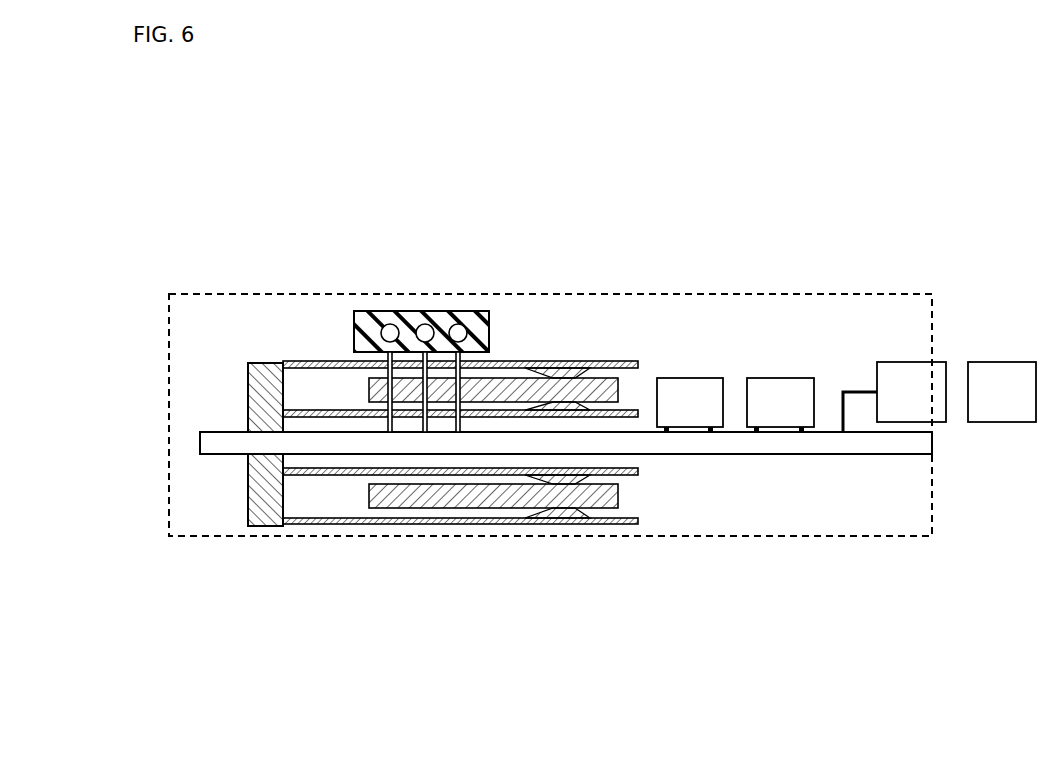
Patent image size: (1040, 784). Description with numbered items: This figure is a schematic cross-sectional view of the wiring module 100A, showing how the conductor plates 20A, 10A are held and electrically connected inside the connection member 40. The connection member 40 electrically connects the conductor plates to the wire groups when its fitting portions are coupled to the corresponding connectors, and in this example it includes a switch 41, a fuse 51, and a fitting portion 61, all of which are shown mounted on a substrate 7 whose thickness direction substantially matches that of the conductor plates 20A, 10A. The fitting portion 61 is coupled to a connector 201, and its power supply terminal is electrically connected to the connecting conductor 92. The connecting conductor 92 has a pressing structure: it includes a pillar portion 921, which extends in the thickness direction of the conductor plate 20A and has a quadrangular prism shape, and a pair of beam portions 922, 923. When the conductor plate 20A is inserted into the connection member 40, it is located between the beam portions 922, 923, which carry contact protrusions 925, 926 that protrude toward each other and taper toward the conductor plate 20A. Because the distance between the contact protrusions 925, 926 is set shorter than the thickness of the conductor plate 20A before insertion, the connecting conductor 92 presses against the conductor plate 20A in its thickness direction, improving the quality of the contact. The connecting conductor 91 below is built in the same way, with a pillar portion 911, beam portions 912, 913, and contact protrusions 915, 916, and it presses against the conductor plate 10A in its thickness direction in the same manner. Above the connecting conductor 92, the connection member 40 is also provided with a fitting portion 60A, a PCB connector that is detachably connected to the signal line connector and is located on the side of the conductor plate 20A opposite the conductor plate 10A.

The wiring module 100A is at (834, 251).
The connection member 40 is at (882, 294).
The substrate 7 is at (828, 437).
The conductor plate 20A is at (445, 340).
The connecting conductor 92 is at (411, 340).
The pillar portion 921 is at (262, 398).
The beam portion 922 is at (296, 361).
The beam portion 923 is at (302, 412).
The contact protrusion 925 is at (563, 368).
The contact protrusion 926 is at (590, 372).
The fitting portion 60A is at (428, 311).
The conductor plate 10A is at (451, 543).
The connecting conductor 91 is at (411, 529).
The pillar portion 911 is at (262, 498).
The beam portion 912 is at (310, 526).
The beam portion 913 is at (298, 474).
The contact protrusion 915 is at (568, 492).
The contact protrusion 916 is at (557, 524).
The switch 41 is at (705, 378).
The fuse 51 is at (797, 378).
The fitting portion 61 is at (909, 371).
The connector 201 is at (1009, 371).